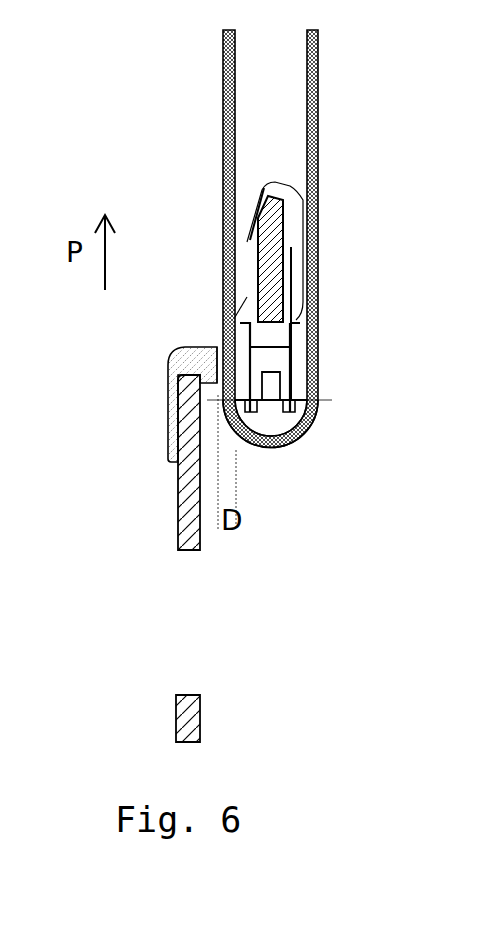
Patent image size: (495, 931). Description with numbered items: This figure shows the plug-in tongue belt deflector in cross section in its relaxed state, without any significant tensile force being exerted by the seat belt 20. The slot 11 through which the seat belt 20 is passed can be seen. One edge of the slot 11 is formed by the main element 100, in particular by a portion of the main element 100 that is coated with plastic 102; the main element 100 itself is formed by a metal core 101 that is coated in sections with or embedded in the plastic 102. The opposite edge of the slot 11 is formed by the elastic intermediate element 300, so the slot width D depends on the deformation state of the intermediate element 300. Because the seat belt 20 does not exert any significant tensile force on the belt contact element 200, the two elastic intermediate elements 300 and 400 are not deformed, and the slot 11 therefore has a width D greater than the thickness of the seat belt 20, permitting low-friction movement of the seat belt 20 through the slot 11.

The seat belt 20 is at (313, 268).
The slot 11 is at (218, 344).
The main element 100 is at (134, 435).
The metal core 101 is at (188, 522).
The plastic 102 is at (190, 363).
The belt contact element 200 is at (283, 427).
The elastic intermediate element 300 is at (250, 415).
The elastic intermediate element 400 is at (303, 372).